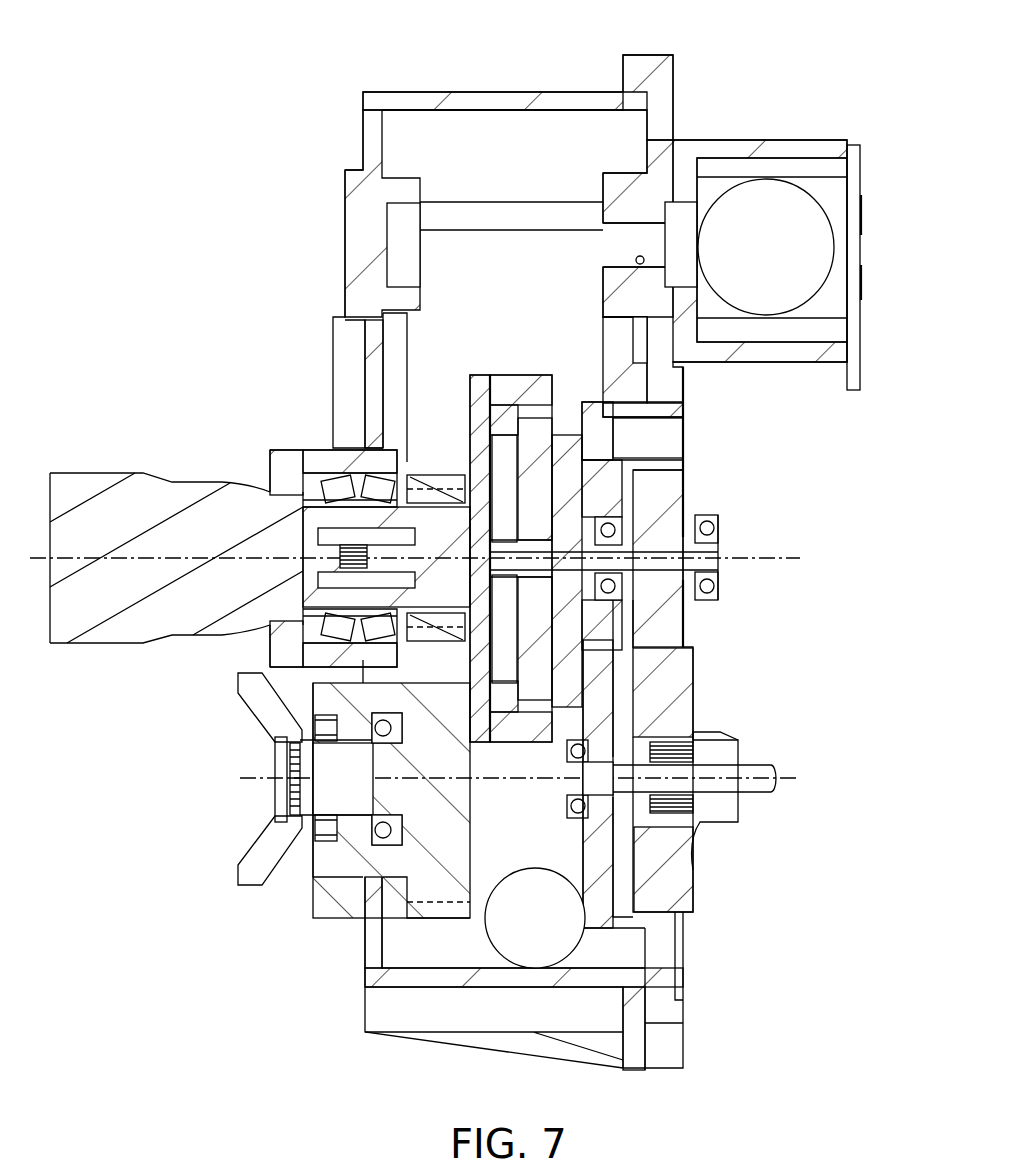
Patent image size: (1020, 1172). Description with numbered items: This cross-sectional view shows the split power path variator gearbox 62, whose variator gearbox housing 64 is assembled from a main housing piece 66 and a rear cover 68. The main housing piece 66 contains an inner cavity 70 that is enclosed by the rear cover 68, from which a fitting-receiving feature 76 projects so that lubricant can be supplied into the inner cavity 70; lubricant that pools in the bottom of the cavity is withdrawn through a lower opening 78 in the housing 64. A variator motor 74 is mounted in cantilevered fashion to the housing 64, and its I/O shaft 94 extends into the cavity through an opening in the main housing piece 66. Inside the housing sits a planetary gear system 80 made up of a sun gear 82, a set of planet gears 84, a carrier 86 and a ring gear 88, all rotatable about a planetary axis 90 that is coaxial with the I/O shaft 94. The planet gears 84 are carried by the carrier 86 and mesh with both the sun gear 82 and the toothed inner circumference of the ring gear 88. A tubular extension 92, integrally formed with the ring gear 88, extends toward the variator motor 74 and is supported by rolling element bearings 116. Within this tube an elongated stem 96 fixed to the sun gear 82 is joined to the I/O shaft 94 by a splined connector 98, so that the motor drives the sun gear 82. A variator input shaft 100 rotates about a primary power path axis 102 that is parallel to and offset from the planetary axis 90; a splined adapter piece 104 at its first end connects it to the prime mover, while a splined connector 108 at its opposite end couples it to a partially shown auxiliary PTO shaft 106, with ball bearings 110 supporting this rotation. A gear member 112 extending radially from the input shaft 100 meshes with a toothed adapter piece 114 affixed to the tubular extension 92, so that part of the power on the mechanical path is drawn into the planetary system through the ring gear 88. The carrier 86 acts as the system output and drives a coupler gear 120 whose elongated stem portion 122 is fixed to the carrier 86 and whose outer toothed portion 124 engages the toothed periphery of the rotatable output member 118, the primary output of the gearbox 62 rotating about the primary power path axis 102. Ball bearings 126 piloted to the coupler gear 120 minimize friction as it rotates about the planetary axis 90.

The split power path variator gearbox 62 is at (158, 182).
The variator gearbox housing 64 is at (366, 982).
The main housing piece 66 is at (356, 231).
The rear cover 68 is at (672, 72).
The inner cavity 70 is at (526, 166).
The variator motor 74 is at (81, 484).
The fitting-receiving feature 76 is at (748, 147).
The lower opening 78 is at (549, 930).
The planetary gear system 80 is at (548, 434).
The sun gear 82 is at (530, 548).
The planet gears 84 is at (547, 502).
The carrier 86 is at (577, 450).
The ring gear 88 is at (514, 372).
The planetary axis 90 is at (735, 554).
The tubular extension 92 is at (308, 597).
The variator motor I/O shaft 94 is at (313, 567).
The elongated stem 96 is at (445, 568).
The splined connector 98 is at (320, 537).
The variator input shaft 100 is at (310, 767).
The primary power path axis 102 is at (237, 777).
The splined adapter piece 104 is at (253, 710).
The auxiliary PTO shaft 106 is at (757, 788).
The splined connector 108 is at (637, 755).
The ball bearings 110 is at (368, 842).
The gear member 112 is at (445, 887).
The toothed adapter piece 114 is at (420, 475).
The rolling element bearings 116 is at (368, 475).
The rotatable output member 118 is at (680, 696).
The coupler gear 120 is at (686, 630).
The elongated stem portion 122 is at (580, 552).
The outer toothed portion 124 is at (675, 484).
The ball bearings 126 is at (615, 589).